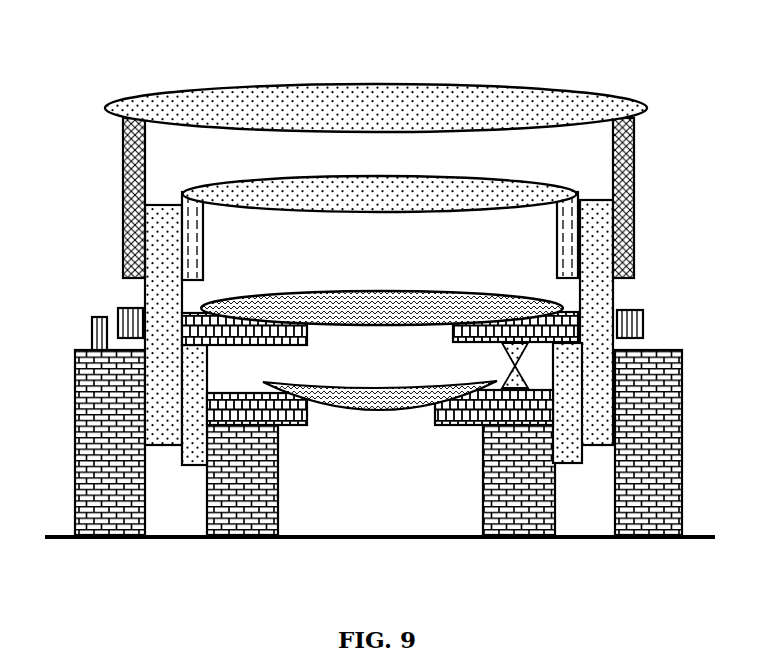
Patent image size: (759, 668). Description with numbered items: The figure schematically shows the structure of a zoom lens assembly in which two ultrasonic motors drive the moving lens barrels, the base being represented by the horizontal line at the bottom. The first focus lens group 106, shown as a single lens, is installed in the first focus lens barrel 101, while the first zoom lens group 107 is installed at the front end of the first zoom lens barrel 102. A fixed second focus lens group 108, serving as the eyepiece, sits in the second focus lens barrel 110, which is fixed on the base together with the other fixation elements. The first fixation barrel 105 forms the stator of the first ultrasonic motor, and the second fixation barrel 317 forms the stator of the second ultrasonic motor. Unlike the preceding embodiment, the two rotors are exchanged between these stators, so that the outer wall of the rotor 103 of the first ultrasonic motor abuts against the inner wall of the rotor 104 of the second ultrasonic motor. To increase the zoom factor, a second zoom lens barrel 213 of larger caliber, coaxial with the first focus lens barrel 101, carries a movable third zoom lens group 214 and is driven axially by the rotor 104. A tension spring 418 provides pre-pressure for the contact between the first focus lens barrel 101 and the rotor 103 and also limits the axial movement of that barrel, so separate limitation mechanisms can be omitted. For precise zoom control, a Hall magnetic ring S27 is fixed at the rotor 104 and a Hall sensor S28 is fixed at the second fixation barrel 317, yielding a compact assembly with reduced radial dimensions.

The third zoom lens group 214 is at (313, 100).
The second zoom lens barrel 213 is at (623, 120).
The first zoom lens group 107 is at (396, 188).
The first focus lens group 106 is at (438, 293).
The first zoom lens barrel 102 is at (560, 233).
The first focus lens barrel 101 is at (558, 318).
The tension spring 418 is at (527, 370).
The second focus lens barrel 110 is at (227, 407).
The rotor of the first ultrasonic motor 103 is at (192, 455).
The second focus lens group 108 is at (395, 403).
The first fixation barrel 105 is at (505, 515).
The rotor of the second ultrasonic motor 104 is at (598, 428).
The second fixation barrel 317 is at (634, 512).
The Hall magnetic ring S27 is at (133, 313).
The Hall sensor S28 is at (92, 330).